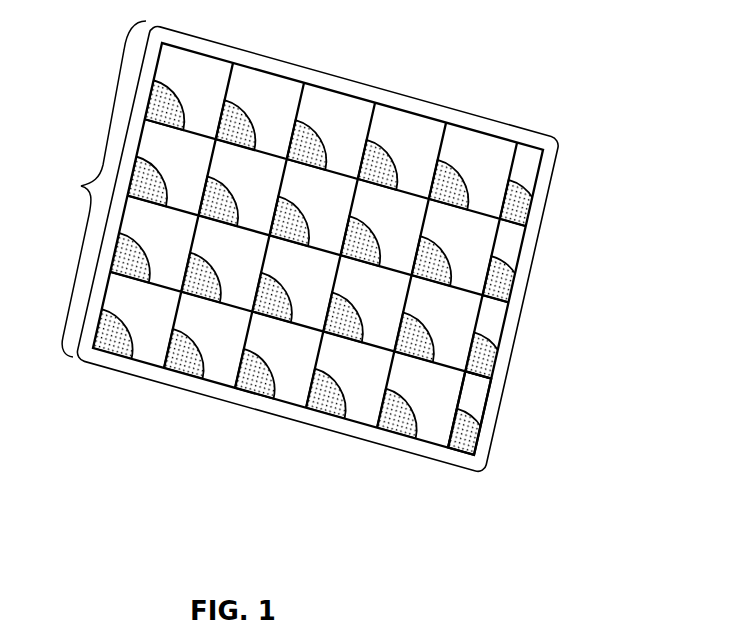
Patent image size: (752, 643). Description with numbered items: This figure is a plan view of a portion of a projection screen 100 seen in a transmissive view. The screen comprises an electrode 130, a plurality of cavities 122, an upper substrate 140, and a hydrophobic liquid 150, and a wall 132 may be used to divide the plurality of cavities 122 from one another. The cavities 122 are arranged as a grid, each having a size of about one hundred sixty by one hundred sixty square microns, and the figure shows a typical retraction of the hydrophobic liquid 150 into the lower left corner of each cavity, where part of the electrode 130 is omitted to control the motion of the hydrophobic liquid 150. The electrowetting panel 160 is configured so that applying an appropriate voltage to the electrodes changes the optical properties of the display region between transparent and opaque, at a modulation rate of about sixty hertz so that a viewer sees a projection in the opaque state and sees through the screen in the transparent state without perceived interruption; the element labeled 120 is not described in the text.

The projection screen 100 is at (323, 300).
The pixel array 120 is at (328, 313).
The cavities 122 is at (430, 423).
The electrode 130 is at (385, 443).
The wall 132 is at (460, 428).
The upper substrate 140 is at (395, 220).
The hydrophobic liquid 150 is at (253, 383).
The electrowetting panel 160 is at (93, 189).